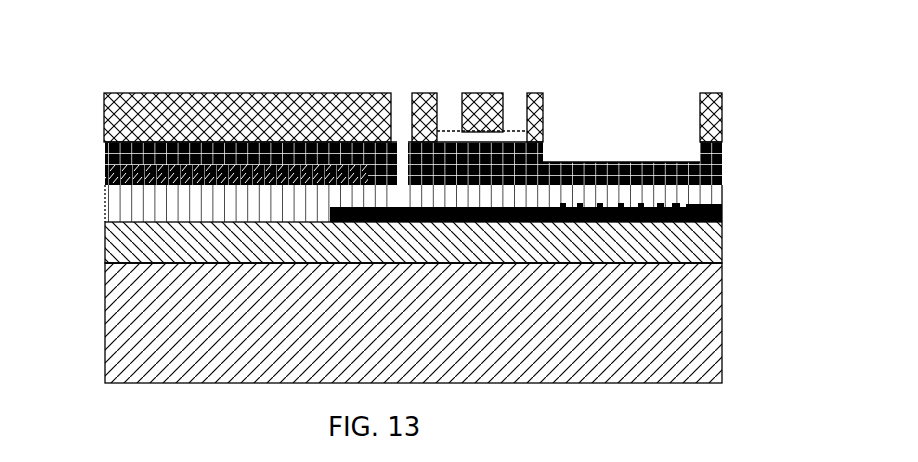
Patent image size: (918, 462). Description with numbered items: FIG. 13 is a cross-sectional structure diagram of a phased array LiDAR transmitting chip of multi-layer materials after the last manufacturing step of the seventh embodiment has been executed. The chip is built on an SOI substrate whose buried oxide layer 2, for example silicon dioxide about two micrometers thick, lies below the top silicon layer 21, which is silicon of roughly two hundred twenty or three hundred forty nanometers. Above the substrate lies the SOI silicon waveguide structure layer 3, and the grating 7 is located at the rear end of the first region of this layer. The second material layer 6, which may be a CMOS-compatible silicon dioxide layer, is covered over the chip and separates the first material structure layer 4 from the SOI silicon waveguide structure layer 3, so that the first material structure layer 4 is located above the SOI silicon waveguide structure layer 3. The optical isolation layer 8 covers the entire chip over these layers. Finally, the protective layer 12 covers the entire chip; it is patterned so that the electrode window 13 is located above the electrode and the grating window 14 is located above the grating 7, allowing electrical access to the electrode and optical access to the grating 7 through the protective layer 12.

The buried oxide layer 2 is at (722, 288).
The top silicon layer 21 is at (722, 243).
The SOI silicon waveguide structure layer 3 is at (722, 224).
The first material structure layer 4 is at (103, 183).
The second material layer 6 is at (103, 186).
The grating 7 is at (700, 205).
The optical isolation layer 8 is at (103, 155).
The protective layer 12 is at (103, 117).
The electrode window 13 is at (403, 100).
The grating window 14 is at (626, 100).